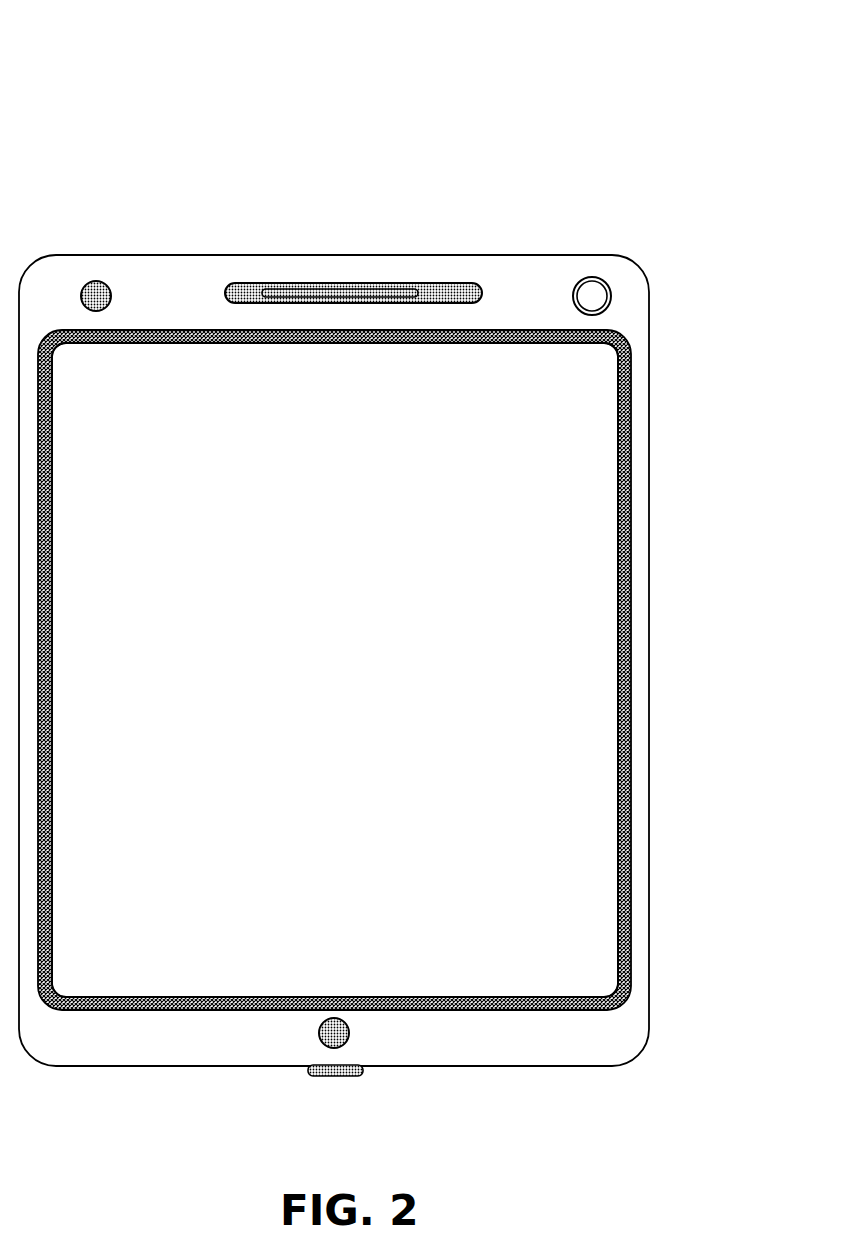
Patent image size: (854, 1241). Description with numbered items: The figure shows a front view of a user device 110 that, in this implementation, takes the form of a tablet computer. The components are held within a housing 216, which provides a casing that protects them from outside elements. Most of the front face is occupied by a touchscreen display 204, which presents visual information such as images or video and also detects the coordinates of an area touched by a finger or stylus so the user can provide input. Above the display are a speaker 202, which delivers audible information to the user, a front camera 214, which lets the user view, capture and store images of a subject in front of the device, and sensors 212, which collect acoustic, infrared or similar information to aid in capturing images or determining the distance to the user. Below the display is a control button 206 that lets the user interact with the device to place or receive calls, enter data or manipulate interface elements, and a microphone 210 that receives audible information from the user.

The user device 110 is at (140, 36).
The speaker 202 is at (344, 283).
The touchscreen display 204 is at (452, 328).
The control button 206 is at (350, 1032).
The microphone 210 is at (352, 1074).
The sensors 212 is at (612, 296).
The front camera 214 is at (96, 281).
The housing 216 is at (631, 463).